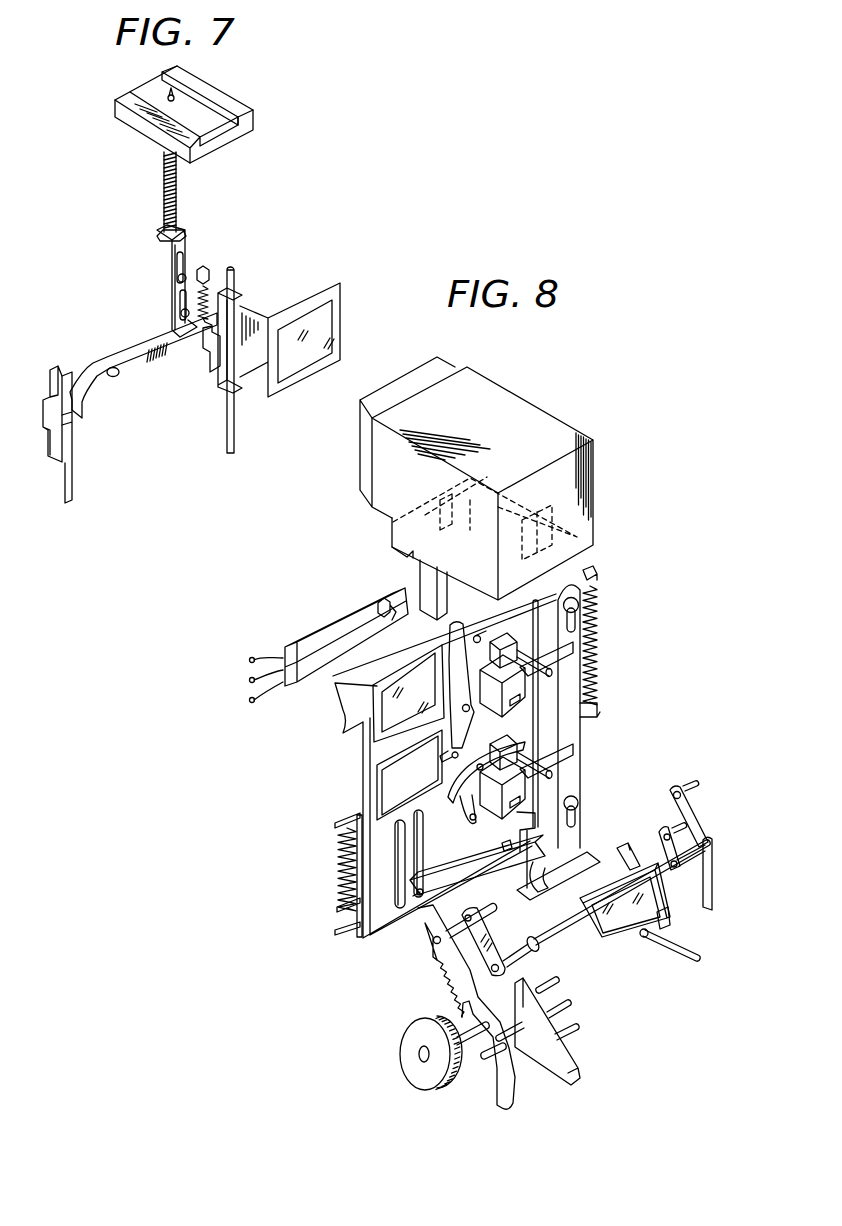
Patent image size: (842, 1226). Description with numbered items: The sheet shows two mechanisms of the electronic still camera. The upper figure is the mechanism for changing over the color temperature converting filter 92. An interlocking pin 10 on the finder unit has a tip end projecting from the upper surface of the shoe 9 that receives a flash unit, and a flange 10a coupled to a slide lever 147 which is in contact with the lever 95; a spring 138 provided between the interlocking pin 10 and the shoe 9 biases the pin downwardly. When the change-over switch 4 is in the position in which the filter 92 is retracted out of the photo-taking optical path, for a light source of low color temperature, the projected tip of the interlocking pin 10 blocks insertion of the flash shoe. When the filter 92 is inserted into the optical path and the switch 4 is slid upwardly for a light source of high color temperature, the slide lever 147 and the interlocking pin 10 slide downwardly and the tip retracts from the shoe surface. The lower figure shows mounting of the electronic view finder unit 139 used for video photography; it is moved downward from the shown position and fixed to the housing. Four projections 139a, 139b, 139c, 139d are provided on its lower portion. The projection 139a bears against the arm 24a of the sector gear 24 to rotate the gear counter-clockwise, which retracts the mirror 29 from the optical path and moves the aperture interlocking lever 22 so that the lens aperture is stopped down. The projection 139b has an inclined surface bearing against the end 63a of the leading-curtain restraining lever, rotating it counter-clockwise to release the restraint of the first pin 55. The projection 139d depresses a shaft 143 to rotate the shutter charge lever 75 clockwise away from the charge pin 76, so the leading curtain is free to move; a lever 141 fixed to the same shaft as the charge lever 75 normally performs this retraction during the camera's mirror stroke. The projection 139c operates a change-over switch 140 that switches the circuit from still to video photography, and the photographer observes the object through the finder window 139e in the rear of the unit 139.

In FIG. 7, the switch 4 is at (46, 408).
In FIG. 7, the shoe 9 is at (245, 110).
In FIG. 7, the interlocking pin 10 is at (173, 92).
In FIG. 7, the flange 10a is at (158, 236).
In FIG. 8, the aperture interlocking lever 22 is at (557, 1062).
In FIG. 8, the sector gear 24 is at (438, 965).
In FIG. 8, the arm 24a is at (418, 915).
In FIG. 8, the mirror 29 is at (620, 920).
In FIG. 8, the first pin 55 is at (440, 766).
In FIG. 8, the end of lever 63 63a is at (460, 622).
In FIG. 8, the shutter charge lever 75 is at (458, 852).
In FIG. 8, the charge pin 76 is at (416, 890).
In FIG. 7, the color temperature converting filter 92 is at (327, 328).
In FIG. 7, the lever 95 is at (135, 352).
In FIG. 7, the spring 138 is at (178, 196).
In FIG. 8, the electronic view finder unit 139 is at (563, 430).
In FIG. 8, the projection 139a is at (421, 598).
In FIG. 8, the projection 139b is at (425, 515).
In FIG. 8, the projection 139c is at (393, 548).
In FIG. 8, the projection 139d is at (575, 540).
In FIG. 8, the finder window 139e is at (415, 368).
In FIG. 8, the change-over switch 140 is at (312, 636).
In FIG. 8, the lever 141 is at (538, 848).
In FIG. 8, the shaft 143 is at (539, 730).
In FIG. 7, the slide lever 147 is at (186, 245).